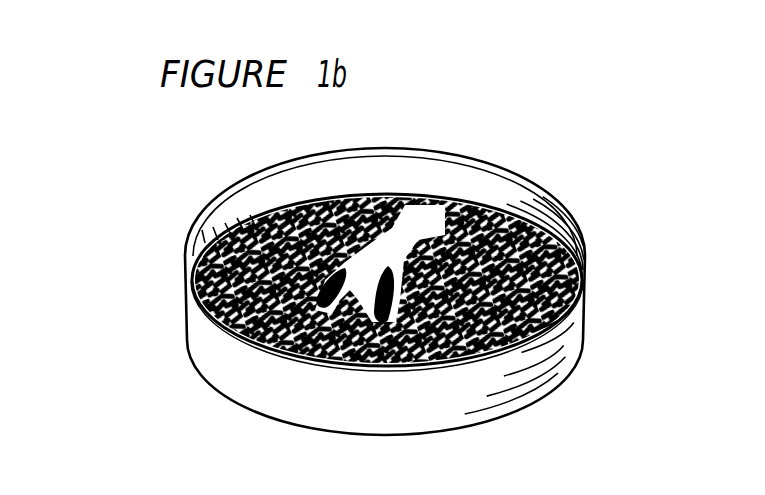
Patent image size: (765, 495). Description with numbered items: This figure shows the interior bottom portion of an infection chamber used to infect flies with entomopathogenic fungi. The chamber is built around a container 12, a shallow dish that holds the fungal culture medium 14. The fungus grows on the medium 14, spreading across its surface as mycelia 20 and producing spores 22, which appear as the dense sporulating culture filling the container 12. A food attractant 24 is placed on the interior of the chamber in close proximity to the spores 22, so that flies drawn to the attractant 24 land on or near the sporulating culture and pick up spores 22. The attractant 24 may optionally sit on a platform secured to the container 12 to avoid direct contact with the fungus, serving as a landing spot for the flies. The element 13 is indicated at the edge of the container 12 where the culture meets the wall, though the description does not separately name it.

The container 12 is at (574, 209).
The inner edge of rim 13 is at (578, 292).
The fungal culture medium 14 is at (213, 368).
The mycelia 20 is at (583, 247).
The spores 22 is at (200, 268).
The food attractant 24 is at (390, 268).